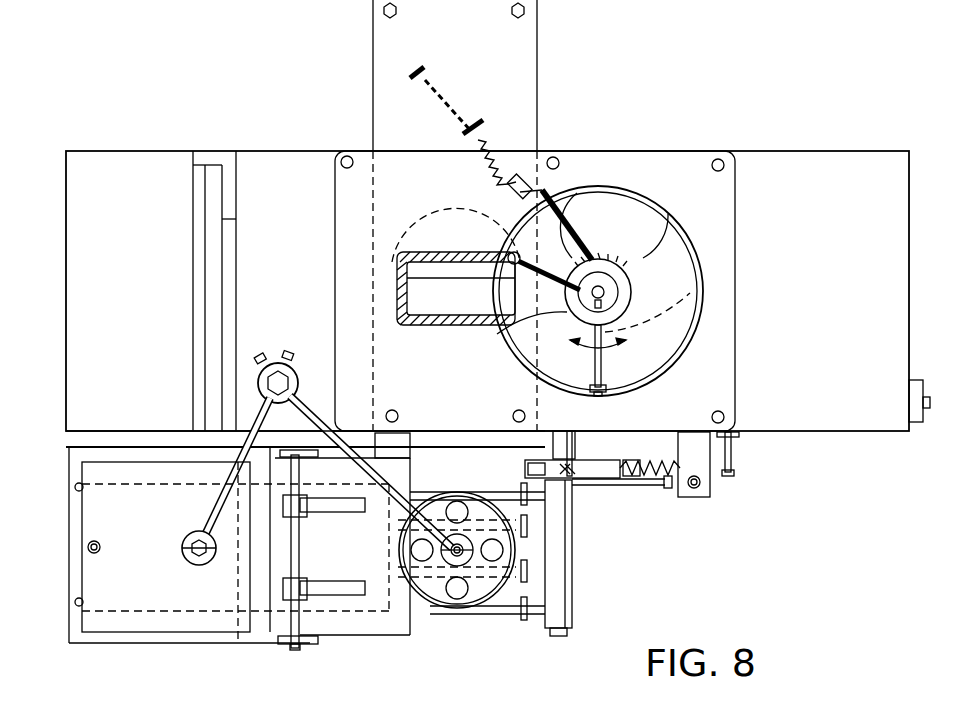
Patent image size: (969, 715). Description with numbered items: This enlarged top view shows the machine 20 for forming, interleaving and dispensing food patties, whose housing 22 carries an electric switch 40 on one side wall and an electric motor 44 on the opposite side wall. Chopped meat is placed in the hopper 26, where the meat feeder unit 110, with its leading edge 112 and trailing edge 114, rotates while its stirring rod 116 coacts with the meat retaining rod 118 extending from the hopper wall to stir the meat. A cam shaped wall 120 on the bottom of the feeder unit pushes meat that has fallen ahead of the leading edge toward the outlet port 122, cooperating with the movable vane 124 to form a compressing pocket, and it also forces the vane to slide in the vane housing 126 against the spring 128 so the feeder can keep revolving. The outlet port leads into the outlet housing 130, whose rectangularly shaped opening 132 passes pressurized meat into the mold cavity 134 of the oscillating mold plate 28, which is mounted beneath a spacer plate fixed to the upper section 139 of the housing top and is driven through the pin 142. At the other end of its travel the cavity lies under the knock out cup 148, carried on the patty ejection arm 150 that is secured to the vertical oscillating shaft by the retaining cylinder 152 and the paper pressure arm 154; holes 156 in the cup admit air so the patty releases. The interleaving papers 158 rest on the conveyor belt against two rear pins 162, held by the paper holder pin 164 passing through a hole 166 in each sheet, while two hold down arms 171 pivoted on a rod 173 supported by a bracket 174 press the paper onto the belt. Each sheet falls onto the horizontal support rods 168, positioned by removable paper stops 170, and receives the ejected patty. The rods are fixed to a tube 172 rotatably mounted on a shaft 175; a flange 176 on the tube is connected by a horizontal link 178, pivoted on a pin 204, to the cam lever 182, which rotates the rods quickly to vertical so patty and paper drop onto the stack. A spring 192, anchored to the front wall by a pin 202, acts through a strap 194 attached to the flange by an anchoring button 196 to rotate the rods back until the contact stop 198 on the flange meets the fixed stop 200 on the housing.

The machine for forming, interleaving and dispensing food patties 20 is at (250, 113).
The housing 22 is at (812, 434).
The hopper 26 is at (702, 228).
The mold plate 28 is at (373, 47).
The electric switch 40 is at (915, 422).
The electric motor 44 is at (115, 162).
The meat feeder unit 110 is at (662, 343).
The leading edge 112 is at (522, 345).
The trailing edge 114 is at (650, 225).
The stirring rod 116 is at (556, 268).
The meat retaining rod 118 is at (601, 352).
The cam shaped wall 120 is at (700, 317).
The outlet port 122 is at (508, 318).
The movable vane 124 is at (612, 192).
The vane housing 126 is at (538, 188).
The spring 128 is at (505, 150).
The outlet housing 130 is at (405, 262).
The rectangularly shaped opening 132 is at (416, 330).
The mold cavity 134 is at (397, 290).
The upper section of the top of the housing 139 is at (335, 201).
The pin 142 is at (446, 0).
The knock out cup 148 is at (400, 552).
The patty ejection arm 150 is at (325, 405).
The retaining cylinder 152 is at (275, 362).
The paper pressure arm 154 is at (212, 430).
The holes 156 is at (452, 510).
The interleaving papers 158 is at (148, 633).
The rear pins 162 is at (76, 486).
The paper holder pin 164 is at (96, 552).
The hole 166 is at (89, 542).
The support rods 168 is at (495, 614).
The removable paper stops 170 is at (522, 620).
The hold down arms 171 is at (345, 498).
The tube 172 is at (572, 594).
The rod 173 is at (302, 545).
The bracket 174 is at (286, 643).
The shaft 175 is at (560, 636).
The flange 176 is at (560, 480).
The horizontal link 178 is at (660, 486).
The lever 182 is at (712, 486).
The spring 192 is at (666, 462).
The strap 194 is at (600, 481).
The anchoring button 196 is at (520, 466).
The contact stop 198 is at (545, 443).
The fixed stop 200 is at (575, 442).
The pin 202 is at (732, 451).
The pin 204 is at (553, 505).